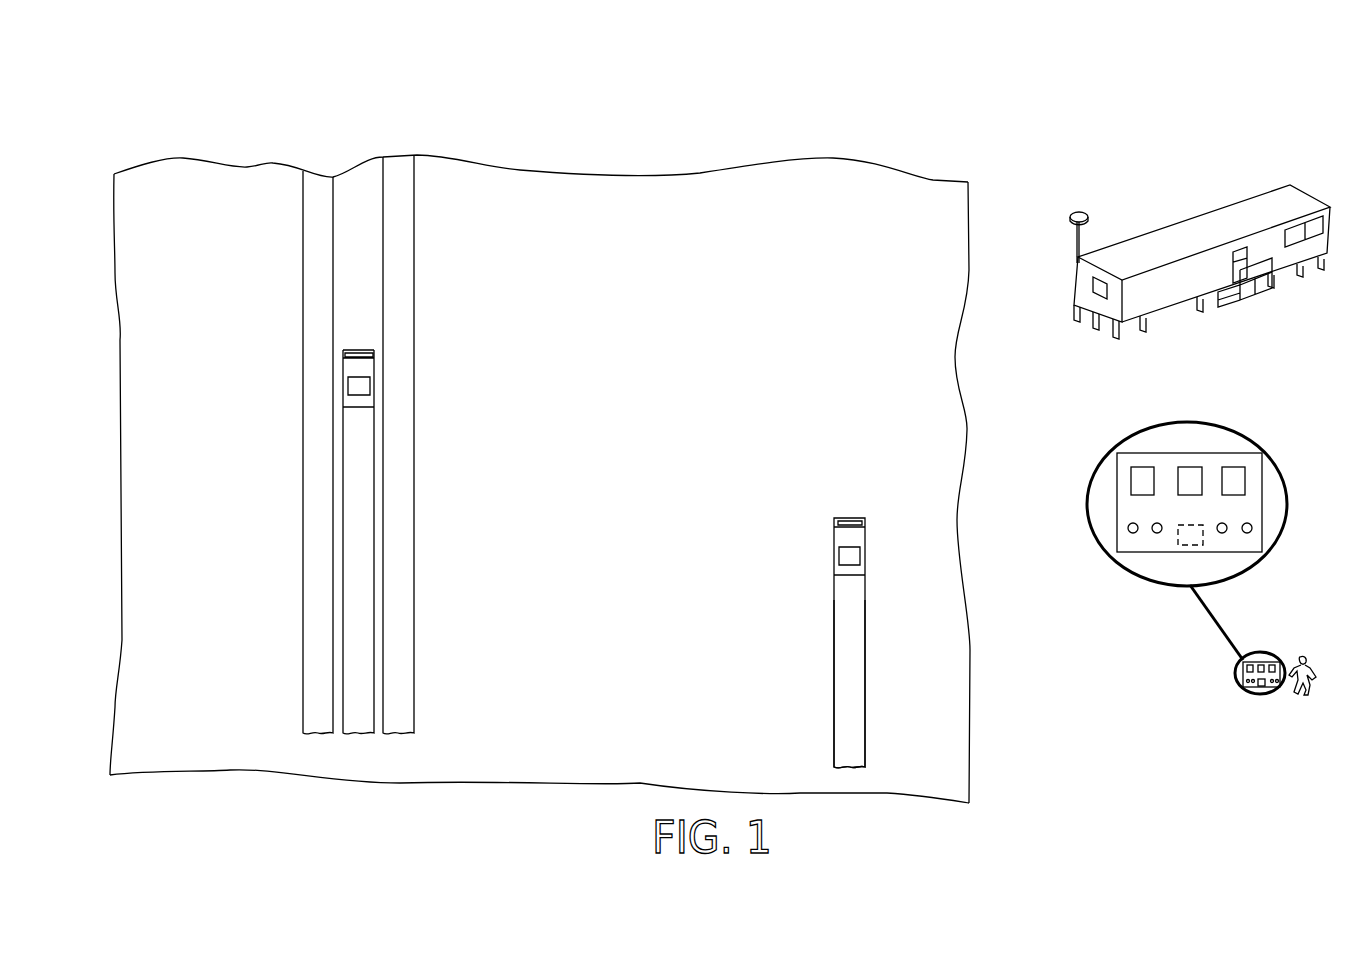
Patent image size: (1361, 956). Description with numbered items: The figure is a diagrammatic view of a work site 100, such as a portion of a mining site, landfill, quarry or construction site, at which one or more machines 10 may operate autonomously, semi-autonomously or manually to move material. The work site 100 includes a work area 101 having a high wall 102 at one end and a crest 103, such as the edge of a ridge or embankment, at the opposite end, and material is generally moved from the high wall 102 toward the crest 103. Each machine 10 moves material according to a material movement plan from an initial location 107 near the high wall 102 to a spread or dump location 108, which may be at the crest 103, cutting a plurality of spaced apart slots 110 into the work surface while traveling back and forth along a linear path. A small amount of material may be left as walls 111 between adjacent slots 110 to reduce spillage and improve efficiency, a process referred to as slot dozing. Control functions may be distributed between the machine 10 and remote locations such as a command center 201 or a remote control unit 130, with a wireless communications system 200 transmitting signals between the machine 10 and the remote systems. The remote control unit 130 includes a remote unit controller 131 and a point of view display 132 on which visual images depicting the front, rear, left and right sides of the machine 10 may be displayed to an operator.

The work site 100 is at (158, 136).
The work area 101 is at (173, 320).
The high wall 102 is at (888, 793).
The crest 103 is at (245, 167).
The initial location 107 is at (820, 780).
The dump location 108 is at (365, 406).
The slots 110 is at (360, 542).
The walls 111 is at (338, 477).
The machine 10 is at (353, 402).
The remote control unit 130 is at (1191, 526).
The remote unit controller 131 is at (1190, 537).
The point of view display 132 is at (1235, 483).
The wireless communications system 200 is at (1200, 225).
The command center 201 is at (1210, 235).